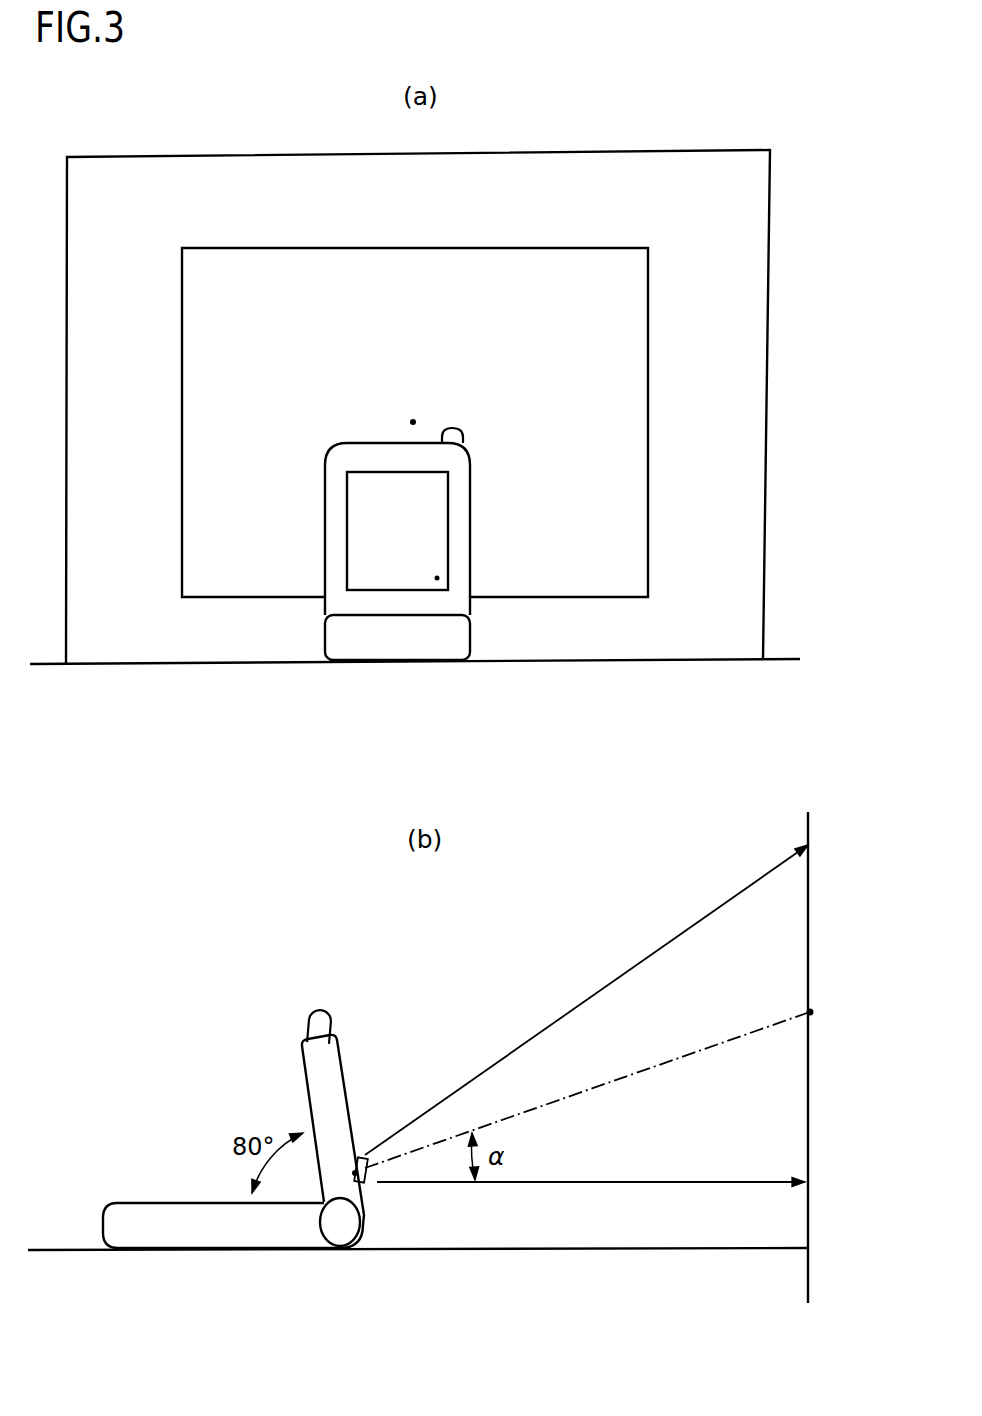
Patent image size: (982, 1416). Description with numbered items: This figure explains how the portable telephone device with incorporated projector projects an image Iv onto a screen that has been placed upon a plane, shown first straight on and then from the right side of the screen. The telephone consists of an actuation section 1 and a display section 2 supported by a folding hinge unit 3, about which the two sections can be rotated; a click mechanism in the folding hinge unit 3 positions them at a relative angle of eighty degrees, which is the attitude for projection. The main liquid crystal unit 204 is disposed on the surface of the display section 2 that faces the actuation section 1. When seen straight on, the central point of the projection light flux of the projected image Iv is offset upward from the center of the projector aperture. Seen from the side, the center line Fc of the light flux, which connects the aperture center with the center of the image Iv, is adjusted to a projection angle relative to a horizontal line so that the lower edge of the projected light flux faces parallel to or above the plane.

The main liquid crystal unit 204 is at (360, 545).
The actuation section 1 is at (183, 1237).
The display section 2 is at (316, 1072).
The folding hinge unit 3 is at (338, 1235).
The projected image Iv is at (432, 240).
The center line of the projection light flux Fc is at (702, 1045).